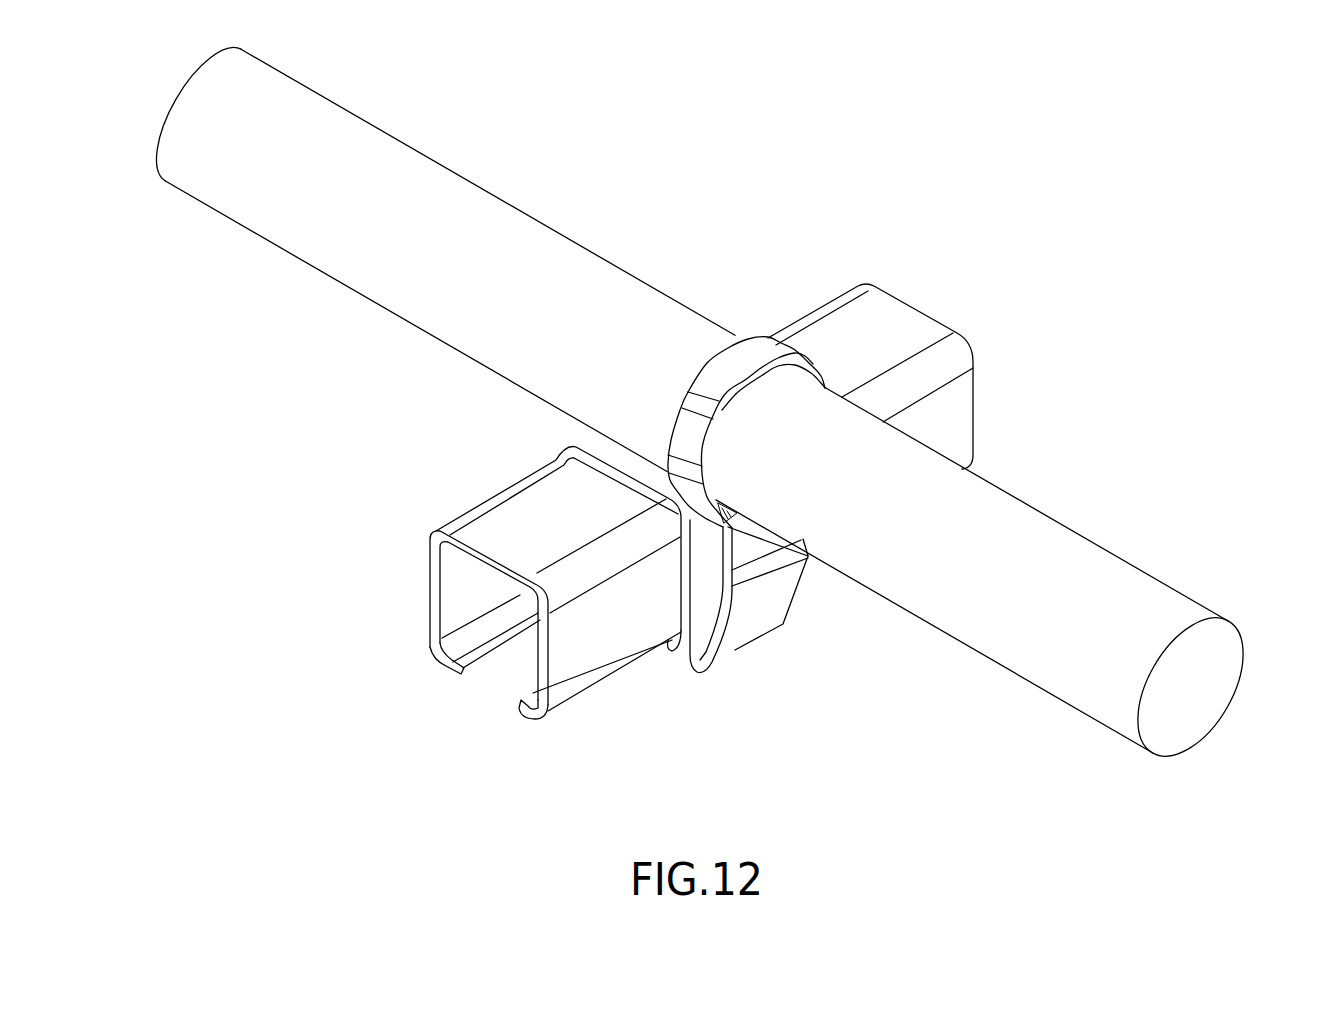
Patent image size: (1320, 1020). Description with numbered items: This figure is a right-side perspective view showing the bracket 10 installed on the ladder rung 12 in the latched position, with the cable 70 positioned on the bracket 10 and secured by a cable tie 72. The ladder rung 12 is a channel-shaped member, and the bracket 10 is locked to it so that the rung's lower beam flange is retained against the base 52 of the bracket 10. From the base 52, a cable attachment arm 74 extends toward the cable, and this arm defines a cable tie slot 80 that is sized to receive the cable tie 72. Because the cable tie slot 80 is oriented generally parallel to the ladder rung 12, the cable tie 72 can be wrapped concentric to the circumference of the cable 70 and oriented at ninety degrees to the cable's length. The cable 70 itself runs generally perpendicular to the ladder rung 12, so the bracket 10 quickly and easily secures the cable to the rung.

The bracket 10 is at (558, 442).
The ladder rung 12 is at (897, 325).
The base 52 is at (670, 653).
The cable 70 is at (1120, 593).
The cable tie 72 is at (750, 353).
The cable attachment arm 74 is at (752, 622).
The cable tie slot 80 is at (700, 598).